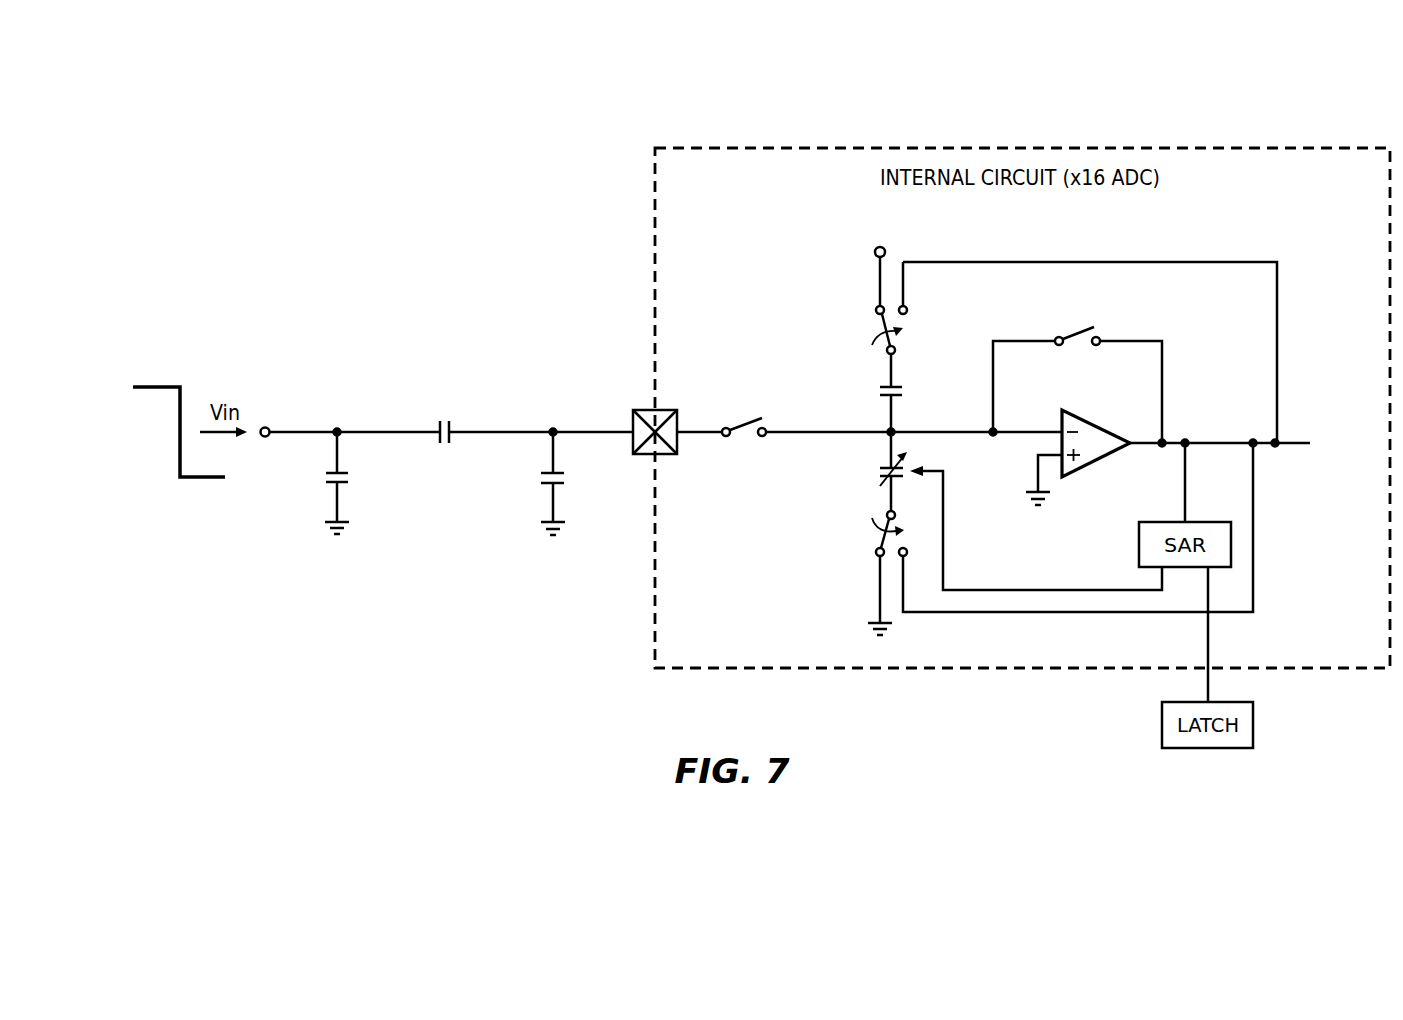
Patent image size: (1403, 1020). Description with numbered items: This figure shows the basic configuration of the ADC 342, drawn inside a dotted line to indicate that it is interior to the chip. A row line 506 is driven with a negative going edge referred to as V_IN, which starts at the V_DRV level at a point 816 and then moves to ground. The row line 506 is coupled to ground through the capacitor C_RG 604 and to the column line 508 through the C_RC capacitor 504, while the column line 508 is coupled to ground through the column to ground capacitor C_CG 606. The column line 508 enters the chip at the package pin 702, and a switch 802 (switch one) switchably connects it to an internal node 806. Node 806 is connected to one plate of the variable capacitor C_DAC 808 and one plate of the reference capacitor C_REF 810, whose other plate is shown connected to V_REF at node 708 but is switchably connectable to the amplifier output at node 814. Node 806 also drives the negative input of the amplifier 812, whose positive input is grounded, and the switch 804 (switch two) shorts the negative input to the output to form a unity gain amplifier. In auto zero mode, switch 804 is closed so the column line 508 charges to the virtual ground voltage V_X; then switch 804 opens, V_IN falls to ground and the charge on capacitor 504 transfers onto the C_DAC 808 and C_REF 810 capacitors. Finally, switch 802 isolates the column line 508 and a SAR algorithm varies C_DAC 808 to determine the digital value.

The ADC 342 is at (323, 207).
The point 816 is at (158, 385).
The row line 506 is at (303, 429).
The capacitor C_RG 604 is at (325, 477).
The C_RC capacitor 504 is at (443, 446).
The column to ground capacitor C_CG 606 is at (540, 477).
The column line 508 is at (574, 428).
The package pin 702 is at (645, 405).
The switch 802 is at (746, 426).
The internal node 806 is at (967, 435).
The node 708 is at (878, 278).
The reference capacitor C_REF 810 is at (878, 391).
The variable capacitor C_DAC 808 is at (872, 470).
The switch 804 is at (1082, 330).
The amplifier 812 is at (1095, 462).
The node 814 is at (1215, 440).